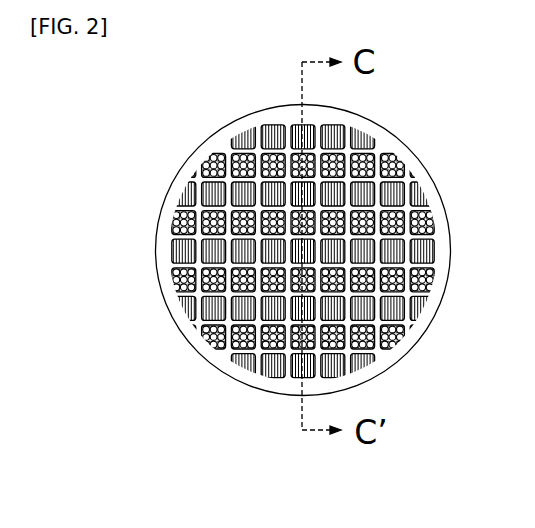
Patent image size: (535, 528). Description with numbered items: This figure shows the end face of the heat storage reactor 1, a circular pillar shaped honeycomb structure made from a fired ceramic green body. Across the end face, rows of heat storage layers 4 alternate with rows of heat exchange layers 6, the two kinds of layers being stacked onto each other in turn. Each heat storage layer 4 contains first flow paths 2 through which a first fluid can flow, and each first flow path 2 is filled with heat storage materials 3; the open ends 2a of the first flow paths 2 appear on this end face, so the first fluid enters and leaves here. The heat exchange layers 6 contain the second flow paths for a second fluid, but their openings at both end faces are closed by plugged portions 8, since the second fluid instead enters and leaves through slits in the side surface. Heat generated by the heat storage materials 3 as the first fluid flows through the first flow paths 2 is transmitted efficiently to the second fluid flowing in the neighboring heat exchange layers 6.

The heat storage reactor 1 is at (321, 275).
The first flow path 2 is at (398, 298).
The open end of first flow path 2a is at (408, 149).
The heat storage material 3 is at (428, 283).
The heat storage layer 4 is at (128, 208).
The heat exchange layer 6 is at (128, 236).
The plugged portion 8 is at (273, 140).